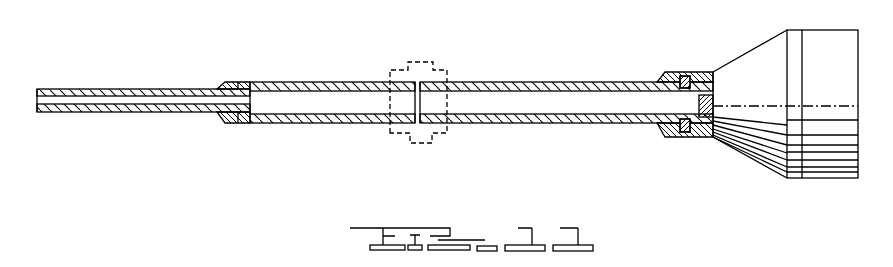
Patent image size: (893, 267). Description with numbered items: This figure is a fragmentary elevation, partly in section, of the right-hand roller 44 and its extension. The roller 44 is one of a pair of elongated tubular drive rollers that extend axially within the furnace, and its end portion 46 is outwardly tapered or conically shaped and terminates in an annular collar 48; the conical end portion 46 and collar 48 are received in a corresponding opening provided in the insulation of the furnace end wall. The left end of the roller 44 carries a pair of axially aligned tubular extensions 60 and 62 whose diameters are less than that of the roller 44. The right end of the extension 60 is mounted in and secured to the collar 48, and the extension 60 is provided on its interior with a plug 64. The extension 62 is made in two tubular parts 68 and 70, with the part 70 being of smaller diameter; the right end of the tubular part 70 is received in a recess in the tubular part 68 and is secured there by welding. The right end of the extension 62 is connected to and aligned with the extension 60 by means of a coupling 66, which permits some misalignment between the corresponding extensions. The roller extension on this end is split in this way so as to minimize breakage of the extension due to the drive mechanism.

The roller 44 is at (833, 168).
The end portion 46 is at (752, 150).
The collar 48 is at (700, 72).
The extension 60 is at (610, 123).
The extension 62 is at (338, 123).
The plug 64 is at (708, 108).
The coupling 66 is at (443, 134).
The tubular part 68 is at (228, 122).
The tubular part 70 is at (148, 112).